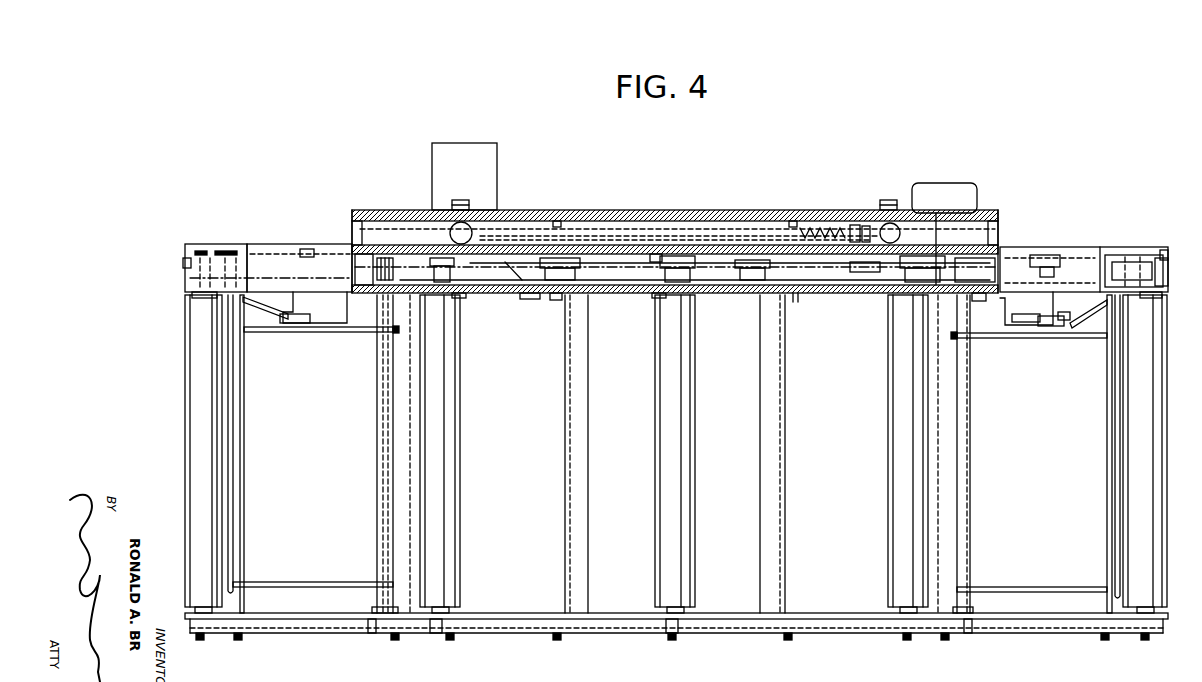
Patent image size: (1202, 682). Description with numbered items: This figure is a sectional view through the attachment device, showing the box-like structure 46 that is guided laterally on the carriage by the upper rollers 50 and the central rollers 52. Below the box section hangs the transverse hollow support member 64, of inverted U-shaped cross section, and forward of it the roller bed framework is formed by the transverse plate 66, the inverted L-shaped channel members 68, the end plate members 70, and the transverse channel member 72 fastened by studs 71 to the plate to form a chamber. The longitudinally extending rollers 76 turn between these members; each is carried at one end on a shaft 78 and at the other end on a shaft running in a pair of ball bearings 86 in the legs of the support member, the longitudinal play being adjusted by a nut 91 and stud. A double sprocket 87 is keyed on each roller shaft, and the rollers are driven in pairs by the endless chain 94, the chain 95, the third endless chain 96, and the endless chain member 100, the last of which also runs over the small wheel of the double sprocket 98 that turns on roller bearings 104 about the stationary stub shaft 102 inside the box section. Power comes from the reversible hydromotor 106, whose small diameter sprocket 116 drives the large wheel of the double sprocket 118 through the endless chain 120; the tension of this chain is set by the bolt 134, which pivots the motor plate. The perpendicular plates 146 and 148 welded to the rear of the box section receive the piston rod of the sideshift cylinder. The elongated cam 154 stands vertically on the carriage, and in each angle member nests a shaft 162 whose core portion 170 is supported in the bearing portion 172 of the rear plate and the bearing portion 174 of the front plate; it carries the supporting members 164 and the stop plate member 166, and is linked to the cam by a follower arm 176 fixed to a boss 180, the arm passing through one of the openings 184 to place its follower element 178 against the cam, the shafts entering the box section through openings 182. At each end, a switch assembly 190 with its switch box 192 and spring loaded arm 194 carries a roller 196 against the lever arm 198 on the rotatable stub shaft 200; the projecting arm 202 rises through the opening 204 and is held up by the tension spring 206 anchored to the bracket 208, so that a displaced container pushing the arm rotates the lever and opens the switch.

The box-like structure 46 is at (358, 210).
The upper rollers 50 is at (451, 226).
The central rollers 52 is at (476, 205).
The hollow support member 64 is at (252, 245).
The transverse plate 66 is at (360, 620).
The inverted L-shaped channel members 68 is at (395, 437).
The plate members 70 is at (231, 541).
The studs 71 is at (556, 640).
The transverse channel member 72 is at (497, 634).
The rollers 76 is at (190, 436).
The shaft 78 is at (450, 640).
The ball bearings 86 is at (194, 243).
The double sprocket 87 is at (183, 262).
The nut 91 is at (430, 638).
The endless chain 94 is at (1077, 260).
The chain 95 is at (290, 277).
The third endless chain 96 is at (794, 302).
The double sprocket 98 is at (512, 276).
The endless chain member 100 is at (618, 266).
The stationary stub shaft 102 is at (557, 301).
The roller bearings 104 is at (531, 300).
The reversible hydromotor 106 is at (967, 192).
The small diameter sprocket 116 is at (937, 213).
The double sprocket 118 is at (733, 290).
The endless chain 120 is at (842, 268).
The bolt 134 is at (873, 270).
The plate 146 is at (836, 228).
The plate 148 is at (855, 225).
The elongated cam 154 is at (588, 234).
The shaft 162 is at (378, 477).
The supporting members 164 is at (268, 333).
The stop plate member 166 is at (244, 405).
The core portion 170 is at (382, 504).
The bearing portion 172 is at (350, 222).
The bearing portion 174 is at (371, 634).
The follower arm 176 is at (497, 242).
The follower element 178 is at (558, 220).
The boss 180 is at (358, 256).
The openings 182 is at (372, 296).
The openings 184 is at (868, 226).
The switch assembly 190 is at (1018, 330).
The switch box 192 is at (320, 314).
The spring loaded arm 194 is at (297, 324).
The roller 196 is at (1065, 312).
The lever arm 198 is at (243, 299).
The rotatable stub shaft 200 is at (1104, 250).
The projecting arm 202 is at (1129, 255).
The opening 204 is at (1172, 262).
The tension spring 206 is at (1048, 262).
The bracket 208 is at (1036, 256).